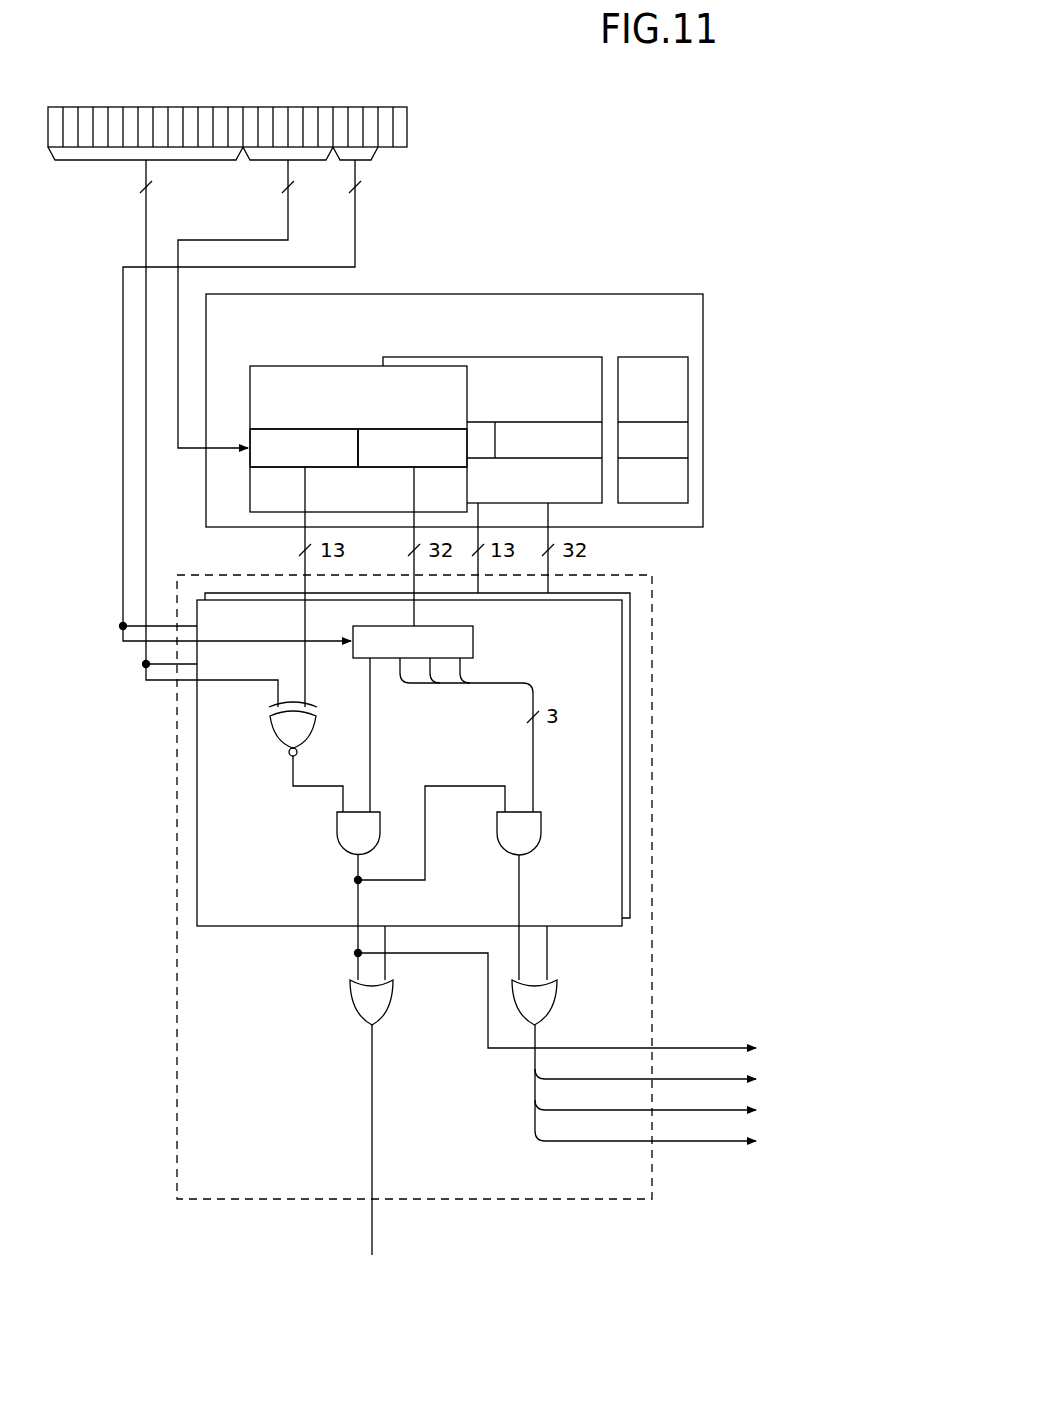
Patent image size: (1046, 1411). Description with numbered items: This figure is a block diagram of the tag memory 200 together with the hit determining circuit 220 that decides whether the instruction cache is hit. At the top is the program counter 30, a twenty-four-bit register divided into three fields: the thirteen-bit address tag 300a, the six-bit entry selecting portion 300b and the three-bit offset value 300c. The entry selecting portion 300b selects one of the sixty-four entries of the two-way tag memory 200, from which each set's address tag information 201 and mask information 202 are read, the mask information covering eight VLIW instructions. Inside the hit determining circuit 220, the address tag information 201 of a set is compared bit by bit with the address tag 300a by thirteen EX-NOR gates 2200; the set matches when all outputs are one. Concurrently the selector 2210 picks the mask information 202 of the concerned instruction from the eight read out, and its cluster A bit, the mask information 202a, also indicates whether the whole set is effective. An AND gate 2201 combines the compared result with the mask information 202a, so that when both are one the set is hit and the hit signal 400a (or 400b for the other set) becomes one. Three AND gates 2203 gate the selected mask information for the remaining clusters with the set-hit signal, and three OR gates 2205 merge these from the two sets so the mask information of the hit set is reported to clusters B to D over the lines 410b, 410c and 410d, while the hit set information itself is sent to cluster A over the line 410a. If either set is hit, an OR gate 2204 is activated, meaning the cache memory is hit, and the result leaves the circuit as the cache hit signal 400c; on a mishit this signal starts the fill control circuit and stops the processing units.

The program counter 30 is at (190, 78).
The address tag 300a is at (146, 213).
The entry selecting portion 300b is at (287, 217).
The offset value 300c is at (355, 243).
The tag memory 200 is at (703, 340).
The address tag information 201 is at (293, 428).
The mask information 202 is at (397, 428).
The hit determining circuit 220 is at (652, 693).
The selector 2210 is at (473, 641).
The mask information for cluster A 202a is at (372, 734).
The EX-NOR gate 2200 is at (283, 730).
The AND gate 2201 is at (345, 829).
The AND gates 2203 is at (538, 832).
The OR gate 2204 is at (358, 998).
The OR gates 2205 is at (557, 988).
The hit (set0) signal 400a is at (357, 942).
The hit (set1) signal 400b is at (385, 968).
The hit signal 400c is at (427, 1297).
The line to cluster A 410a is at (732, 1046).
The line to cluster B 410b is at (688, 1078).
The line to cluster C 410c is at (681, 1111).
The line to cluster D 410d is at (725, 1144).